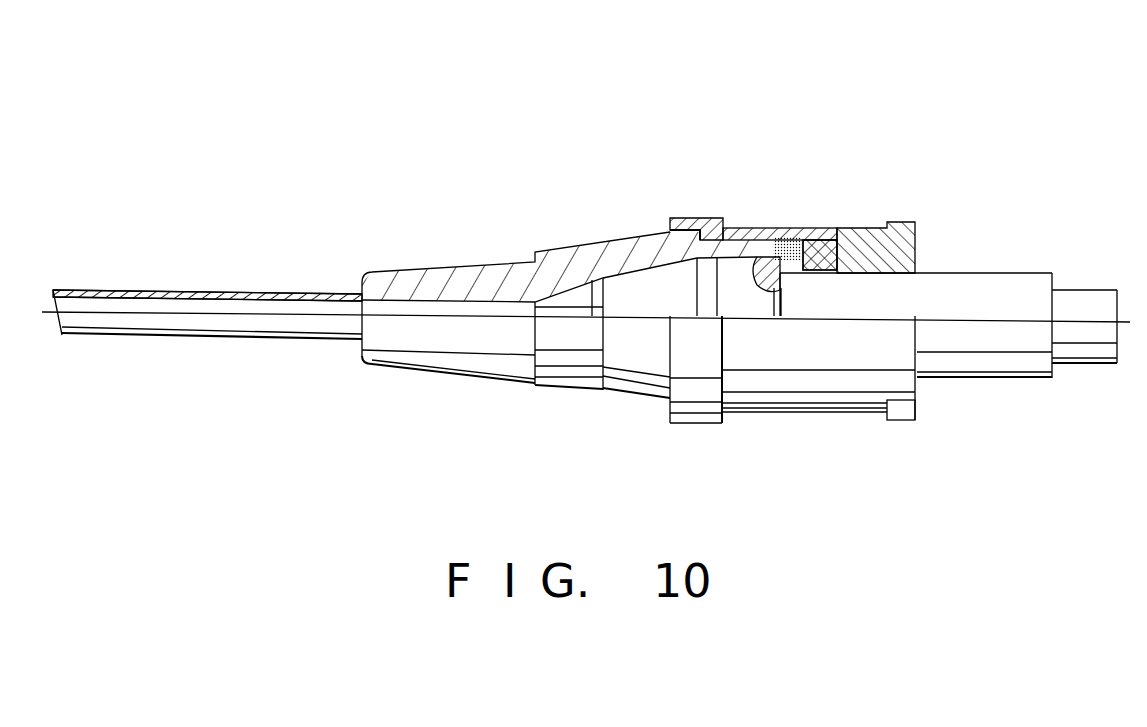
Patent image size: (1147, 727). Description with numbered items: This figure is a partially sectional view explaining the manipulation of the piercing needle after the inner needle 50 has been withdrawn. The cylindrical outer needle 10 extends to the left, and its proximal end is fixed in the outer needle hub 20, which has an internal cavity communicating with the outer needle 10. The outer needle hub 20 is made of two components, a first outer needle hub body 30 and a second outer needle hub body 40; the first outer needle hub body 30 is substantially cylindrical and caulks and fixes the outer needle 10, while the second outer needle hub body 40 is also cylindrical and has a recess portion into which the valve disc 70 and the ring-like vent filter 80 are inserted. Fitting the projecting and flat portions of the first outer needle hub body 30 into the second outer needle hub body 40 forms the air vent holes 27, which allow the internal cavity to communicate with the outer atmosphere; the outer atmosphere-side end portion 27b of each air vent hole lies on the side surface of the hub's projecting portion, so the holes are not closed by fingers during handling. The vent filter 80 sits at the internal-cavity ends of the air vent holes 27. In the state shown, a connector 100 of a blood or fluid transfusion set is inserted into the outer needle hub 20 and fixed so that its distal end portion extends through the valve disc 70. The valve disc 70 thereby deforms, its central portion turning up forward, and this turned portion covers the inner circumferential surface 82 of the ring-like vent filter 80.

The outer needle 10 is at (147, 292).
The outer needle hub 20 is at (661, 138).
The air vent holes 27 is at (684, 218).
The outer atmosphere-side end portion of air vent hole 27b is at (670, 230).
The first outer needle hub body 30 is at (430, 262).
The second outer needle hub body 40 is at (804, 216).
The inner needle 50 is at (256, 310).
The valve disc 70 is at (827, 230).
The vent filter 80 is at (783, 232).
The inner circumferential surface of vent filter 82 is at (765, 300).
The connector 100 is at (1000, 273).